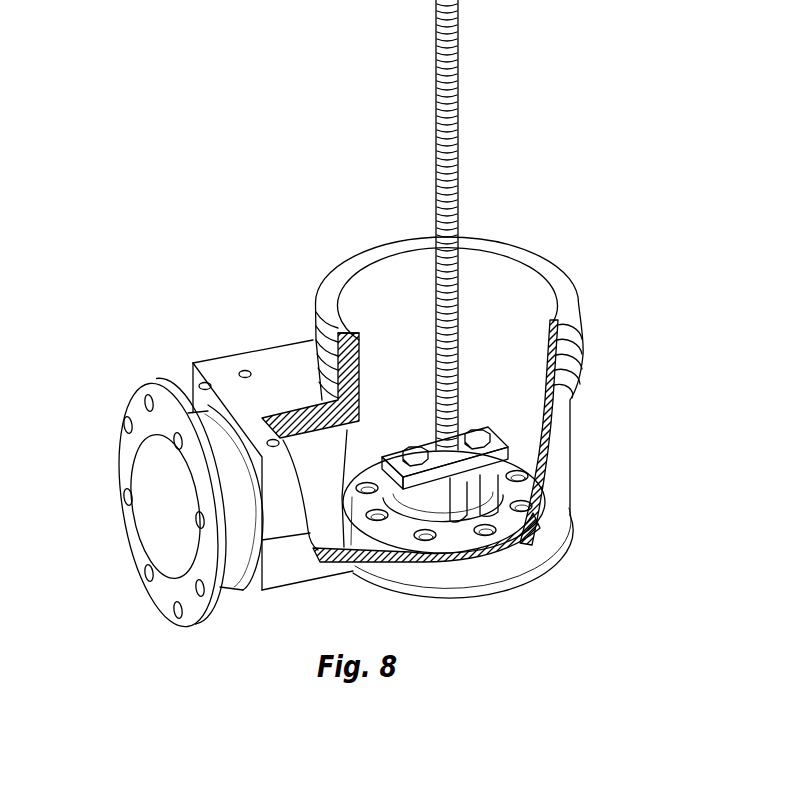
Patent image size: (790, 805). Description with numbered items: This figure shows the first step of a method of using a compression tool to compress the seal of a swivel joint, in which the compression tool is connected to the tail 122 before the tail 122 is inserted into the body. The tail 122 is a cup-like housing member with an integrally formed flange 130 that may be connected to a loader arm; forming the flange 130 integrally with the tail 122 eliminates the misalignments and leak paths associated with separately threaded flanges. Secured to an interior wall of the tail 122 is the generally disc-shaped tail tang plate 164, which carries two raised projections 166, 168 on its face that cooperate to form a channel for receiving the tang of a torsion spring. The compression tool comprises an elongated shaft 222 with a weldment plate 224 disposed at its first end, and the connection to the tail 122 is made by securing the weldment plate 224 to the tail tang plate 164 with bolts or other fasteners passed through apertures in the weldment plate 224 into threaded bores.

The elongated shaft 222 is at (458, 104).
The flange 130 is at (148, 382).
The weldment plate 224 is at (502, 456).
The tail 122 is at (562, 526).
The tail tang plate 164 is at (425, 549).
The raised projection 166 is at (447, 503).
The raised projection 168 is at (490, 492).